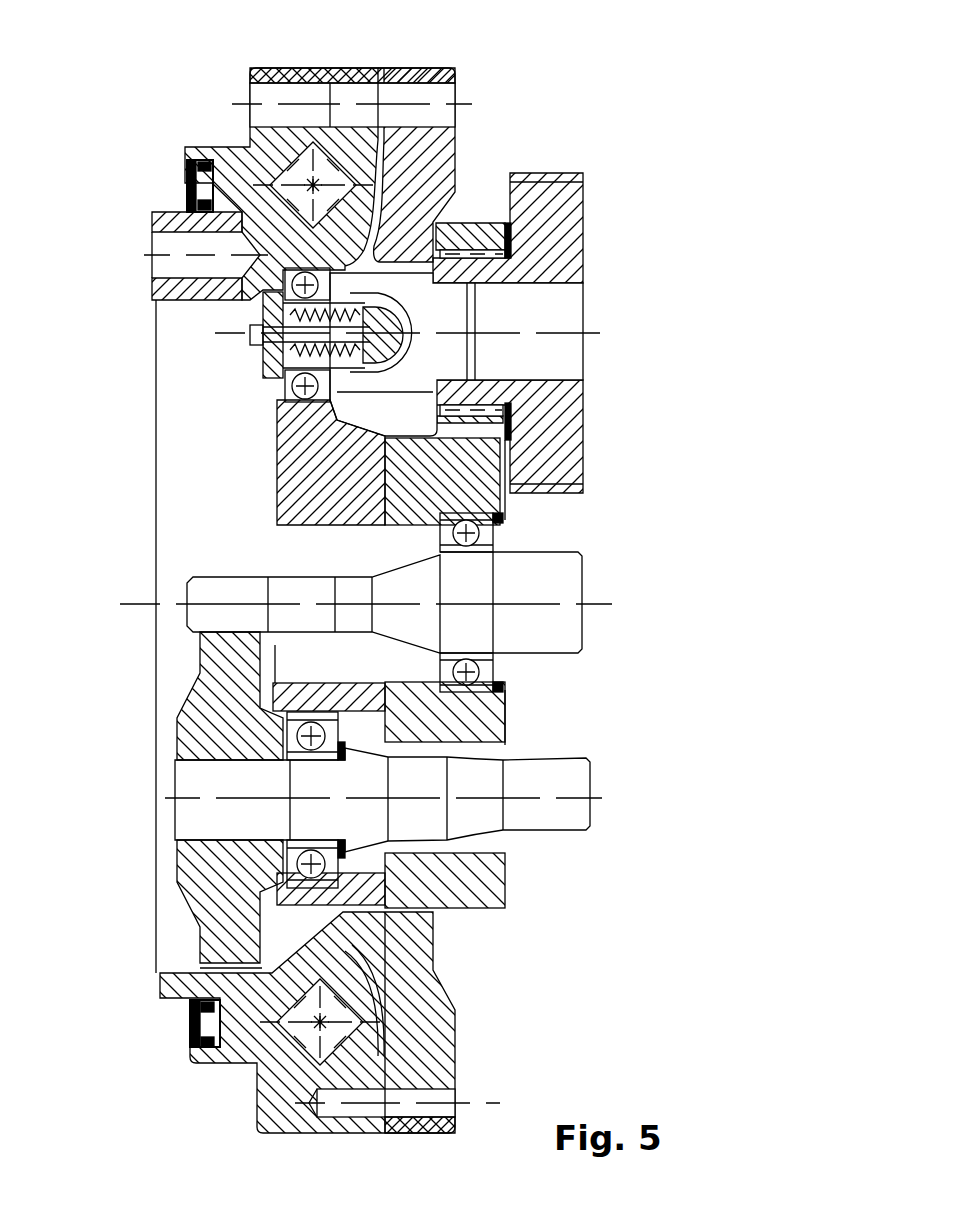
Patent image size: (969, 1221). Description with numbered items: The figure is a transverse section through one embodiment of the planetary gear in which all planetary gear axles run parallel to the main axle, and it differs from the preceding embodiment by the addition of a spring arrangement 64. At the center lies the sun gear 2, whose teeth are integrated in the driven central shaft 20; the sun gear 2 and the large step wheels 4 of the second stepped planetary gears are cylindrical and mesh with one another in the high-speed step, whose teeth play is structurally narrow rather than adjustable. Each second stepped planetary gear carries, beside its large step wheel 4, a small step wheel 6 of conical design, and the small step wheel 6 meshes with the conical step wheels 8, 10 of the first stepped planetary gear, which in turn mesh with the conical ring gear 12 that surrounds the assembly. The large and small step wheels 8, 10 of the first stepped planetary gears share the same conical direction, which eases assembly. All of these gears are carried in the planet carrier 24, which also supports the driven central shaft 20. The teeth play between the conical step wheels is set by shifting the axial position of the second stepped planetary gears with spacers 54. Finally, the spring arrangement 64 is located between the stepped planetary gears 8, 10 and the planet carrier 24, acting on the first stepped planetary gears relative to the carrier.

The ring gear 12 is at (480, 143).
The large step wheel of the first stepped planetary gear 8 is at (585, 180).
The small step wheel of the first stepped planetary gear 10 is at (397, 380).
The spring arrangement 64 is at (243, 364).
The planet carrier 24 is at (303, 466).
The sun gear 2 is at (190, 576).
The driven central shaft 20 is at (553, 577).
The large step wheel of the second stepped planetary gear 4 is at (227, 653).
The spacers 54 is at (337, 760).
The small step wheel of the second stepped planetary gear 6 is at (565, 828).